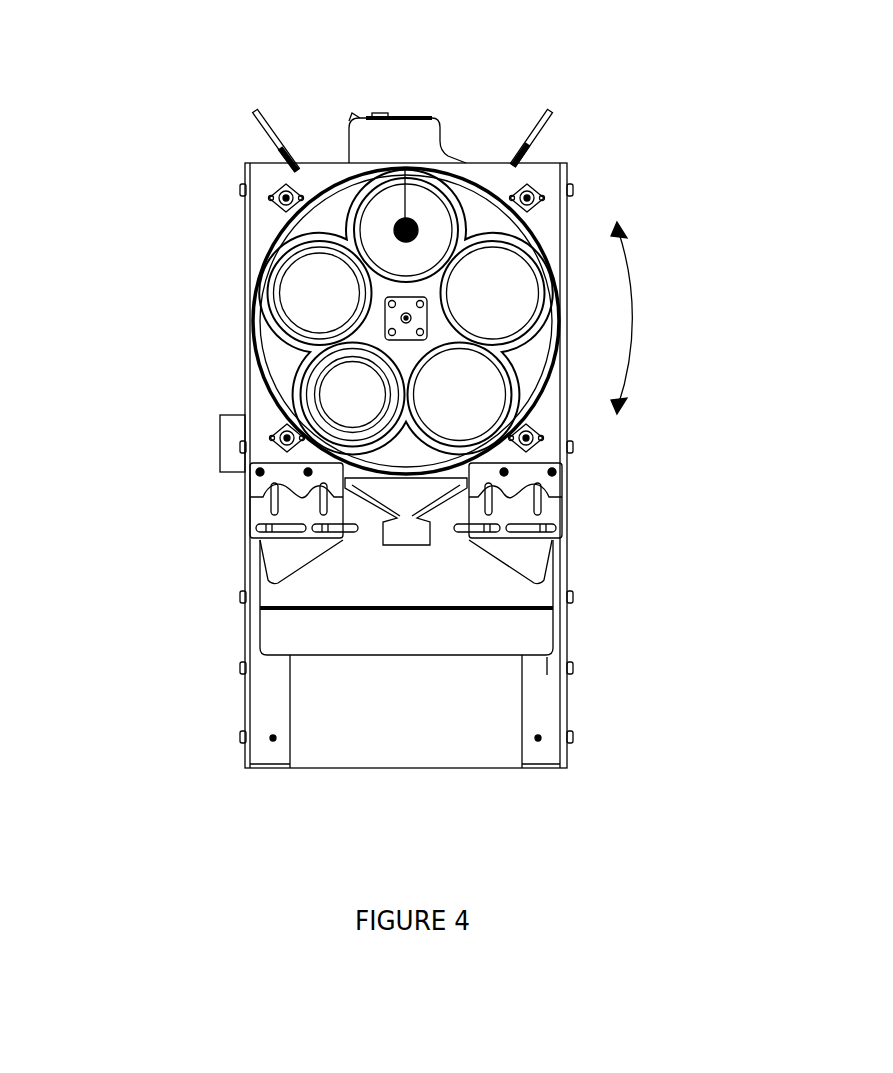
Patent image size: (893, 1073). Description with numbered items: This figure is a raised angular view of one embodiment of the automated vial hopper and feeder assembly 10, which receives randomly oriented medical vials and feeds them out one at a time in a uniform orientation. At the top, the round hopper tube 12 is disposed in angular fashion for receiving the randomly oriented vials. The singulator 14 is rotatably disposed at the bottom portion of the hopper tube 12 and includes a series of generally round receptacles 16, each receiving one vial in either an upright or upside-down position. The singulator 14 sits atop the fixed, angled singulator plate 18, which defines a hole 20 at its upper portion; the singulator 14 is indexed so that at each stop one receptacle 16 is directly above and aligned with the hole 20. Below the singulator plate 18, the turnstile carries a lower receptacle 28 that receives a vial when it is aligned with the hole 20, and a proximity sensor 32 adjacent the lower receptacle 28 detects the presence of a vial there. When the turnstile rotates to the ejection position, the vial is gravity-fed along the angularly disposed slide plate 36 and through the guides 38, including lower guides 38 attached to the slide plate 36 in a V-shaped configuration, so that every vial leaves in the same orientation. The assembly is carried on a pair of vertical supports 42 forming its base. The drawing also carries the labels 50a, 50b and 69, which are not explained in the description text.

The automated vial hopper and feeder assembly 10 is at (447, 384).
The hopper tube 12 is at (649, 441).
The singulator 14 is at (314, 321).
The receptacles 16 is at (404, 223).
The singulator plate 18 is at (169, 391).
The hole 20 is at (394, 121).
The lower receptacle 28 is at (403, 112).
The proximity sensor 32 is at (354, 170).
The slide plate 36 is at (499, 607).
The guides 38 is at (404, 652).
The vertical supports 42 is at (404, 711).
The container ring 50a is at (209, 203).
The container ring 50b is at (224, 395).
The sensor 69 is at (157, 443).